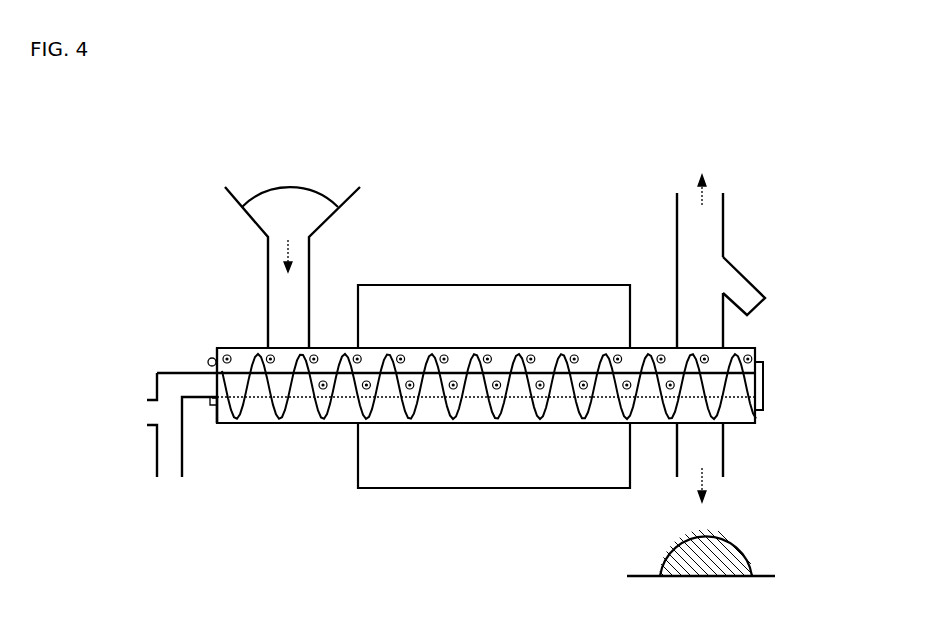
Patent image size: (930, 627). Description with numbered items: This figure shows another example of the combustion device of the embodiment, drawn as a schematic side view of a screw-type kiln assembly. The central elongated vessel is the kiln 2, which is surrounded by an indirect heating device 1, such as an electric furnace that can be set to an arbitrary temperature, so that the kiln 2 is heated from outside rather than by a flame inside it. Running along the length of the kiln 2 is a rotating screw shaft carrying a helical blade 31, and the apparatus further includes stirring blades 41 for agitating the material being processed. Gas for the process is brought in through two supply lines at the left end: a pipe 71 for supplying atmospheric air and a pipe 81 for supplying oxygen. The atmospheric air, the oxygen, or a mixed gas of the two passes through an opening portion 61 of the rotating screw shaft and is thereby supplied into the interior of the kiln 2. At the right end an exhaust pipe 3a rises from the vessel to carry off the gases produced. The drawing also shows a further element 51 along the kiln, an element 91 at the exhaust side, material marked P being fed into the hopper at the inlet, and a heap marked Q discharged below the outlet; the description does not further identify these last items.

The indirect heating device 1 is at (417, 285).
The kiln 2 is at (303, 425).
The exhaust pipe 3a is at (724, 193).
The helical blade 31 is at (243, 425).
The stirring blades 41 is at (318, 347).
The heater elements 51 is at (475, 392).
The opening portion of rotating screw shaft 61 is at (580, 400).
The pipe for supplying atmospheric air 71 is at (170, 468).
The pipe for supplying oxygen 81 is at (142, 413).
The flap valve 91 is at (750, 277).
The raw material powder P is at (273, 193).
The product Q is at (733, 545).